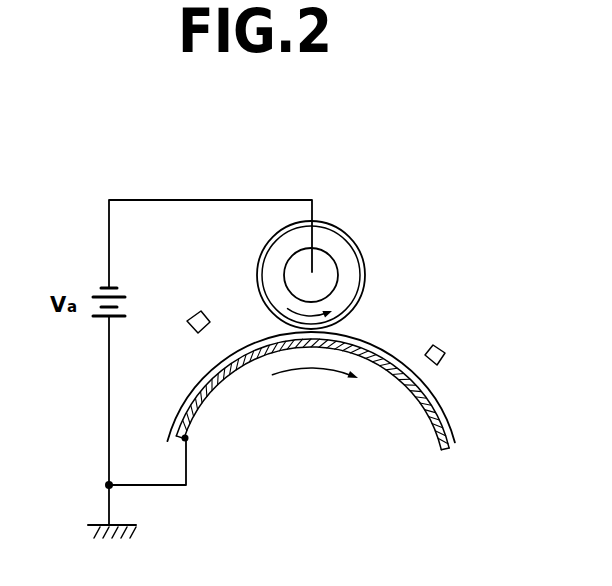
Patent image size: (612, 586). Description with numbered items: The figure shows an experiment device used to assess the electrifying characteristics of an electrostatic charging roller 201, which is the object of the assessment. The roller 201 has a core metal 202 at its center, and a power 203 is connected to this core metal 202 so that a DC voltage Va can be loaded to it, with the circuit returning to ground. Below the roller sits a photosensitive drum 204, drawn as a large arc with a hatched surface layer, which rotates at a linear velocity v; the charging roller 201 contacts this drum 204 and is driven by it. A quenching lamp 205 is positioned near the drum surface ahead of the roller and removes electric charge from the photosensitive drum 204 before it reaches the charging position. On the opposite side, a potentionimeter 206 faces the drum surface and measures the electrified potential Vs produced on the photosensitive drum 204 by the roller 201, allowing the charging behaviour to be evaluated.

The electrostatic charging roller 201 is at (341, 257).
The core metal 202 is at (323, 272).
The power 203 is at (130, 308).
The photosensitive drum 204 is at (392, 347).
The quenching lamp 205 is at (198, 322).
The potentionimeter 206 is at (445, 353).